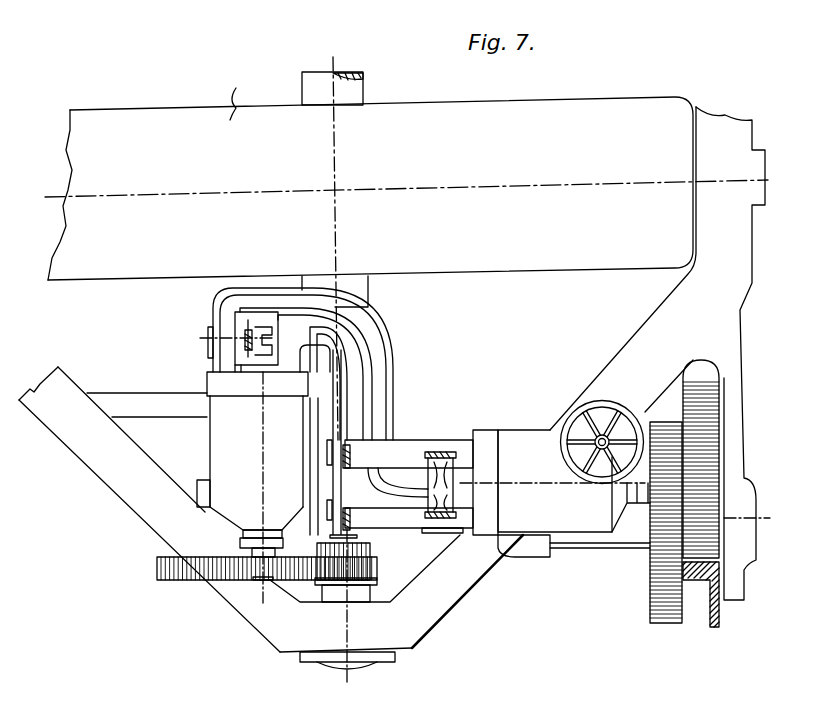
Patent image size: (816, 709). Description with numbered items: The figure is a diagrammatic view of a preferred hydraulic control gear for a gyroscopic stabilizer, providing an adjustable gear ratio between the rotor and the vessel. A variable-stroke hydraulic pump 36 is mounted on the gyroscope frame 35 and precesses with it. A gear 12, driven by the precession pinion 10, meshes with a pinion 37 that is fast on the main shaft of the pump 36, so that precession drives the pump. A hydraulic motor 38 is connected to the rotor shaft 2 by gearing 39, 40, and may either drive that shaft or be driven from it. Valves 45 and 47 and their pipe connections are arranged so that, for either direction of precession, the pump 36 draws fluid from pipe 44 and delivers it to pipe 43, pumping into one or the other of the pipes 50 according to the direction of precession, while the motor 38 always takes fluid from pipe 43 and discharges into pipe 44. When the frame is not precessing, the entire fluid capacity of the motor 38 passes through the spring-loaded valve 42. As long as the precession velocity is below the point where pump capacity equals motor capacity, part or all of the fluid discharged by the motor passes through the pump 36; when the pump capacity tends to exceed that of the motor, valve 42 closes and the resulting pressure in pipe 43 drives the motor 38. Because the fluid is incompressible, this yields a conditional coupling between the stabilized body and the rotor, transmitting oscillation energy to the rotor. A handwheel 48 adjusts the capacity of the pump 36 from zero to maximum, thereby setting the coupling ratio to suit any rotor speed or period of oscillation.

The rotor shaft 2 is at (360, 287).
The precession pinion 10 is at (707, 498).
The gear 12 is at (650, 588).
The gyroscope frame 35 is at (738, 580).
The variable-stroke hydraulic pump 36 is at (565, 513).
The pinion 37 is at (658, 495).
The hydraulic motor 38 is at (230, 430).
The gearing 39 is at (157, 580).
The gearing 40 is at (377, 557).
The valve 42 is at (255, 337).
The pipe 43 is at (319, 432).
The pipe 44 is at (375, 347).
The valve 45 is at (443, 452).
The valve 47 is at (343, 515).
The handwheel 48 is at (600, 400).
The pipes 50 is at (398, 452).